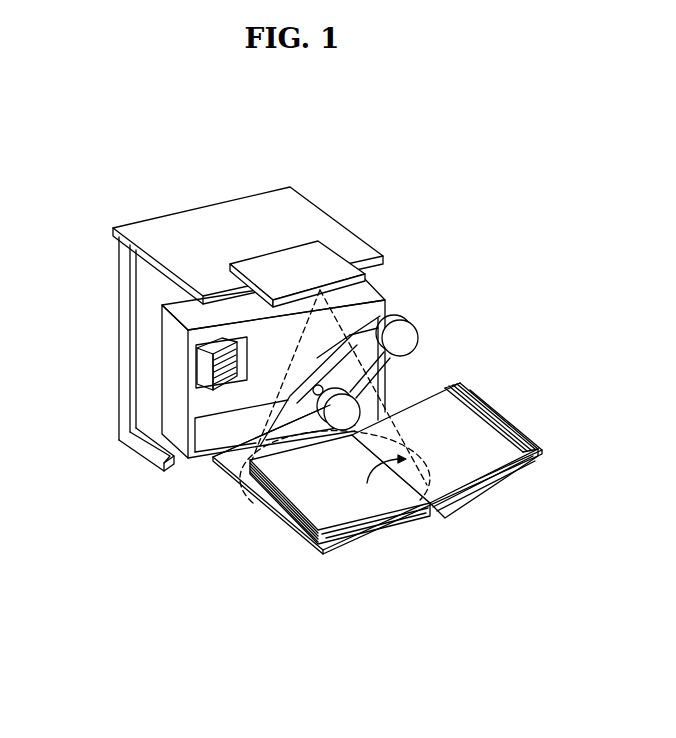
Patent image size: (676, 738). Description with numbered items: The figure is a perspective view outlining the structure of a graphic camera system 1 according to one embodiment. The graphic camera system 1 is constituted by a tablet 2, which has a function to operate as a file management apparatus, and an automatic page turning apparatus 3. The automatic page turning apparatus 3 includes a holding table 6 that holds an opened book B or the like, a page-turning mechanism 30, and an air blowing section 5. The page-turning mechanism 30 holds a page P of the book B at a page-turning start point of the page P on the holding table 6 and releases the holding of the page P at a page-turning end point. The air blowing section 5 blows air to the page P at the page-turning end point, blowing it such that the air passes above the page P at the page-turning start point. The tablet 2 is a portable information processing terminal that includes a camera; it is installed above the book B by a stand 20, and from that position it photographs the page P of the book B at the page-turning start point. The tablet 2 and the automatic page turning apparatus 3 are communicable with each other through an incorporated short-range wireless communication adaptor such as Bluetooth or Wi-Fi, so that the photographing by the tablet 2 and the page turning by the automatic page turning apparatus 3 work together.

The graphic camera system 1 is at (292, 423).
The tablet 2 is at (302, 260).
The automatic page turning apparatus 3 is at (167, 355).
The air blowing section 5 is at (197, 378).
The holding table 6 is at (338, 540).
The stand 20 is at (173, 225).
The page-turning mechanism 30 is at (413, 320).
The book B is at (483, 482).
The page P is at (363, 498).